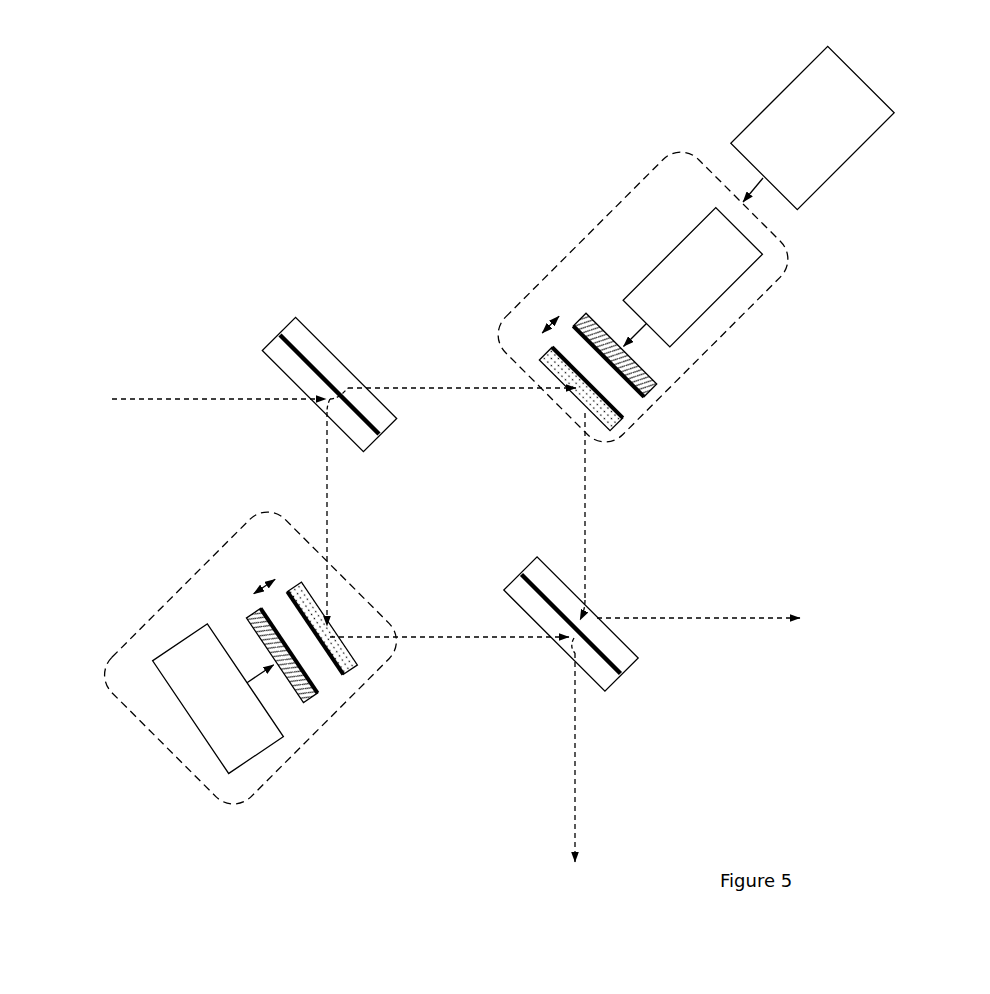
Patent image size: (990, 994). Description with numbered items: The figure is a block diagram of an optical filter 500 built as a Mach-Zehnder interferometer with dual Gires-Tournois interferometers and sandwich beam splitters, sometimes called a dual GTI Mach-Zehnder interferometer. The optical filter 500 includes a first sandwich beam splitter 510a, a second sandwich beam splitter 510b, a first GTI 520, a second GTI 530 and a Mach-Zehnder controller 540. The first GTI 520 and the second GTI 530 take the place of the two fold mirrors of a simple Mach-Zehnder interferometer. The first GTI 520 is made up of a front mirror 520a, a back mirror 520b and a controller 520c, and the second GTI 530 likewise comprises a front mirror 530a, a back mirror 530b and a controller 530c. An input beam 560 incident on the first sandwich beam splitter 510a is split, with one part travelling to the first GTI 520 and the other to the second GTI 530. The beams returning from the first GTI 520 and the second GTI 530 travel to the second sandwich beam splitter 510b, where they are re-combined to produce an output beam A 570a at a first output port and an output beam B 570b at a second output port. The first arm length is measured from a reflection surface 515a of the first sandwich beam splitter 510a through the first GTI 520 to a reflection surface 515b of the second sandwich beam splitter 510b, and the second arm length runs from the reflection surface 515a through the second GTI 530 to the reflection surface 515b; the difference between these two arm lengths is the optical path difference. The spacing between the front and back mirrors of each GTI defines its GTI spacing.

The optical filter 500 is at (494, 486).
The first sandwich beam splitter 510a is at (268, 355).
The second sandwich beam splitter 510b is at (608, 686).
The reflection surface 515a is at (327, 330).
The reflection surface 515b is at (620, 677).
The GTI 1 520 is at (310, 710).
The GTI 1 front mirror 520a is at (367, 710).
The GTI 1 back mirror 520b is at (350, 747).
The GTI 1 controller 520c is at (232, 766).
The GTI 2 530 is at (676, 337).
The GTI 2 front mirror 530a is at (622, 430).
The GTI 2 back mirror 530b is at (659, 394).
The GTI 2 controller 530c is at (742, 282).
The Mach-Zehnder controller 540 is at (860, 169).
The input beam 560 is at (191, 393).
The output beam A 570a is at (736, 643).
The output beam B 570b is at (622, 773).